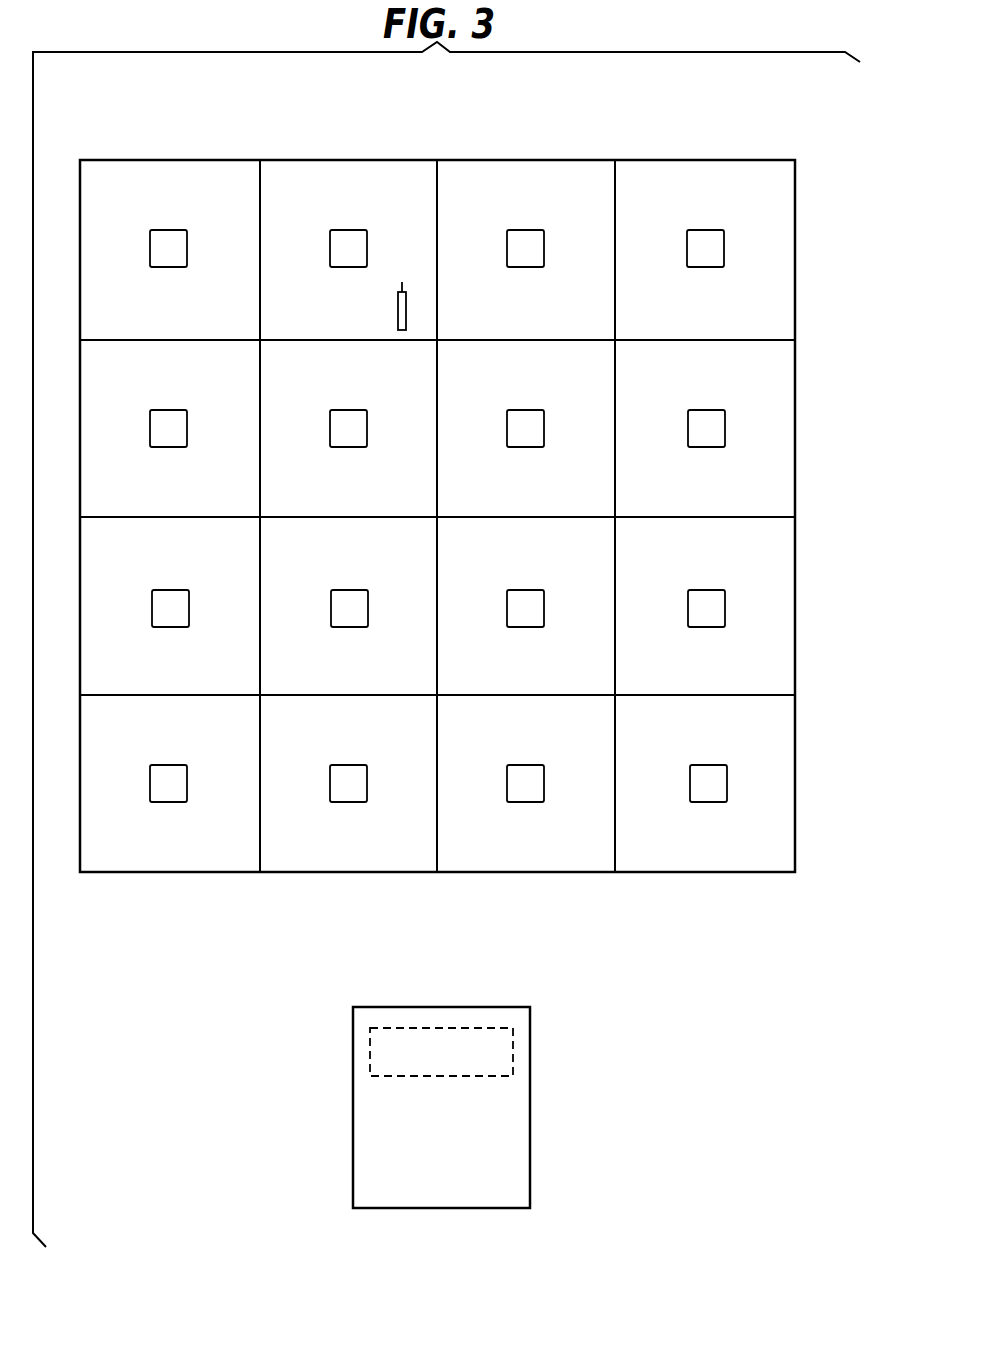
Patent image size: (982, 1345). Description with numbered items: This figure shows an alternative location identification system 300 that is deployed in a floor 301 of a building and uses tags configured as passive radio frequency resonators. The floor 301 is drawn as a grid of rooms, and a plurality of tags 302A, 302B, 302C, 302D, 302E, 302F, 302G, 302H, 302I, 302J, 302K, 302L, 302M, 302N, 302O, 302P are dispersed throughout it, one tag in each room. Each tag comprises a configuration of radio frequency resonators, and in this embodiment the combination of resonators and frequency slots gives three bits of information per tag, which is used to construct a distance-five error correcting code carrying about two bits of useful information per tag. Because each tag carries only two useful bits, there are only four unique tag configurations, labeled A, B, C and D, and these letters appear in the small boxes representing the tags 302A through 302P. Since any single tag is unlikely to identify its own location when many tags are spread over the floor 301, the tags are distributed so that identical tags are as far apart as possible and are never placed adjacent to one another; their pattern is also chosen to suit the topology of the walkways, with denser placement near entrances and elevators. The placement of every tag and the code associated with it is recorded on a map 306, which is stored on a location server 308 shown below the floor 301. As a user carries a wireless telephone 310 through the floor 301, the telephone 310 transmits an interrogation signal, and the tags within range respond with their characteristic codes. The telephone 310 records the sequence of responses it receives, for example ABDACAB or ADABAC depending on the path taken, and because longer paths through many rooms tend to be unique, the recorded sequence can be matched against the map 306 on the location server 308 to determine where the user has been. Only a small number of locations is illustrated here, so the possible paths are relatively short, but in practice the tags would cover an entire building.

The location identification system 300 is at (720, 100).
The floor 301 is at (126, 160).
The tag 302A is at (173, 230).
The tag 302B is at (353, 230).
The tag 302C is at (530, 230).
The tag 302D is at (708, 230).
The tag 302E is at (173, 410).
The tag 302F is at (353, 410).
The tag 302G is at (530, 410).
The tag 302H is at (708, 410).
The tag 302I is at (173, 590).
The tag 302J is at (353, 590).
The tag 302K is at (530, 590).
The tag 302L is at (710, 590).
The tag 302M is at (173, 765).
The tag 302N is at (712, 765).
The tag 302O is at (353, 765).
The tag 302P is at (530, 765).
The map 306 is at (513, 1058).
The location server 308 is at (378, 1007).
The wireless telephone 310 is at (398, 320).